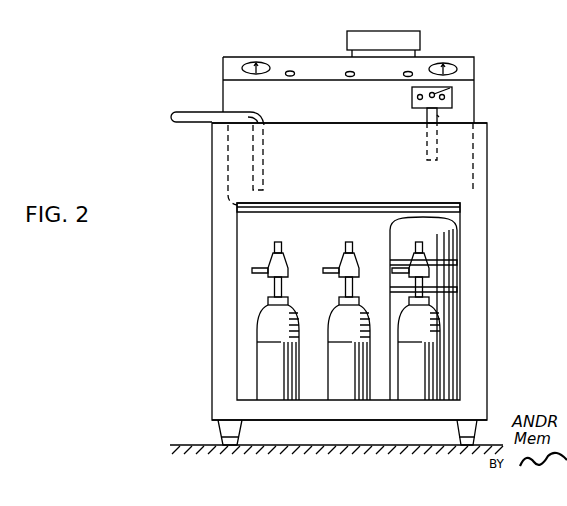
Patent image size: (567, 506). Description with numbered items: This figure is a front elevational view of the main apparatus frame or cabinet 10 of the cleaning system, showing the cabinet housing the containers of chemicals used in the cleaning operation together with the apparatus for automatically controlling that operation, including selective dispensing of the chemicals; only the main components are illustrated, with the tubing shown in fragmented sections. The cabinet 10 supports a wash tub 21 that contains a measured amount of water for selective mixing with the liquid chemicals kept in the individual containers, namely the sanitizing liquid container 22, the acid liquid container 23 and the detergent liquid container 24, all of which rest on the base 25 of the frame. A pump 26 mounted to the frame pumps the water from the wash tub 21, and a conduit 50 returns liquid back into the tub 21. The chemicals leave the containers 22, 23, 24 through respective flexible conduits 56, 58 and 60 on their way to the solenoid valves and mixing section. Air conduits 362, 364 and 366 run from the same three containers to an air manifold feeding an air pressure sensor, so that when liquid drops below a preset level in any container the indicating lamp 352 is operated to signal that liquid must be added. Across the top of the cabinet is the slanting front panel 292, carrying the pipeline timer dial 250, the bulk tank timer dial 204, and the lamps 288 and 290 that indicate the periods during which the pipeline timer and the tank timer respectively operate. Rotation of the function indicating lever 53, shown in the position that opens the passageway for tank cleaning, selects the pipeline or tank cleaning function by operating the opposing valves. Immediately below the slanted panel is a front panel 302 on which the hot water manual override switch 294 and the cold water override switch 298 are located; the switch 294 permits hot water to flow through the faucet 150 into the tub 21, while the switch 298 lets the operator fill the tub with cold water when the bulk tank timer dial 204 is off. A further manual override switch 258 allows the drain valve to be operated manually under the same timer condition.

The frame or cabinet 10 is at (212, 173).
The wash tub 21 is at (304, 118).
The sanitizing liquid container 22 is at (257, 318).
The acid liquid container 23 is at (331, 318).
The detergent liquid container 24 is at (440, 320).
The base 25 is at (352, 421).
The pump 26 is at (448, 236).
The conduit 50 is at (186, 110).
The function indicating lever 53 is at (394, 33).
The flexible conduit 56 is at (270, 264).
The flexible conduit 58 is at (340, 264).
The flexible conduit 60 is at (424, 238).
The faucet 150 is at (438, 117).
The bulk tank timer dial 204 is at (476, 66).
The pipeline timer dial 250 is at (242, 68).
The manual override switch 258 is at (476, 81).
The lamp 288 is at (287, 72).
The lamp 290 is at (418, 66).
The slanting front panel 292 is at (307, 62).
The hot water manual override switch 294 is at (412, 98).
The cold water override switch 298 is at (454, 103).
The front panel 302 is at (368, 133).
The indicating lamp 352 is at (343, 73).
The input air conduit 362 is at (252, 270).
The input air conduit 364 is at (322, 270).
The input air conduit 366 is at (392, 271).